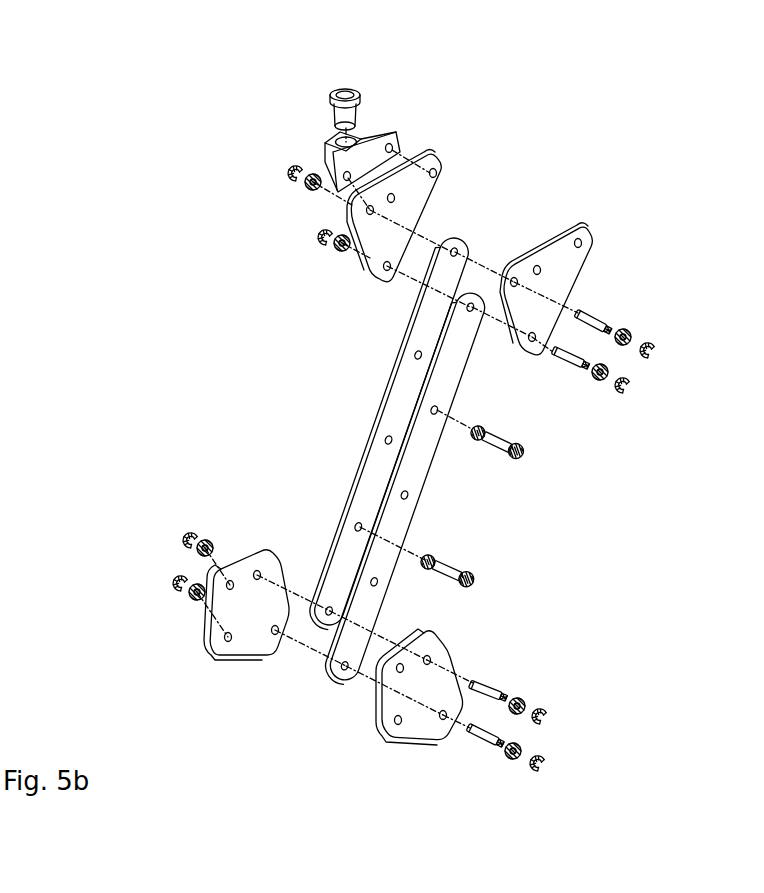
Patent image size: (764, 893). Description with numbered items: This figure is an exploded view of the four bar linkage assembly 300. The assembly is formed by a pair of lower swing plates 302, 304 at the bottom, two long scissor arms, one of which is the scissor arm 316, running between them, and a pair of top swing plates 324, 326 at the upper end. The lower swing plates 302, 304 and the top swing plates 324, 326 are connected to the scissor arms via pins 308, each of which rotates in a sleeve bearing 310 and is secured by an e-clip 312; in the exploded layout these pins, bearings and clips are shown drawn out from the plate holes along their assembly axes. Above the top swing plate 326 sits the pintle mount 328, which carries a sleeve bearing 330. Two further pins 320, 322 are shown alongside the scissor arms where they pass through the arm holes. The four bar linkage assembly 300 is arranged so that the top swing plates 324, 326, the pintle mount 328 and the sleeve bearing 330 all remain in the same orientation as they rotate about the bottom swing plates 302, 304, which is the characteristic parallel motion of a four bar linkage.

The four bar linkage assembly 300 is at (506, 461).
The lower swing plate 302 is at (232, 670).
The lower swing plate 304 is at (385, 732).
The pin 308 is at (495, 668).
The sleeve bearing 310 is at (510, 775).
The e-clip 312 is at (553, 740).
The scissor arm 316 is at (19, 367).
The pivot pin 320 is at (460, 548).
The pivot pin 322 is at (537, 437).
The top swing plate 324 is at (600, 218).
The top swing plate 326 is at (452, 140).
The pintle mount 328 is at (393, 115).
The sleeve bearing 330 is at (323, 93).